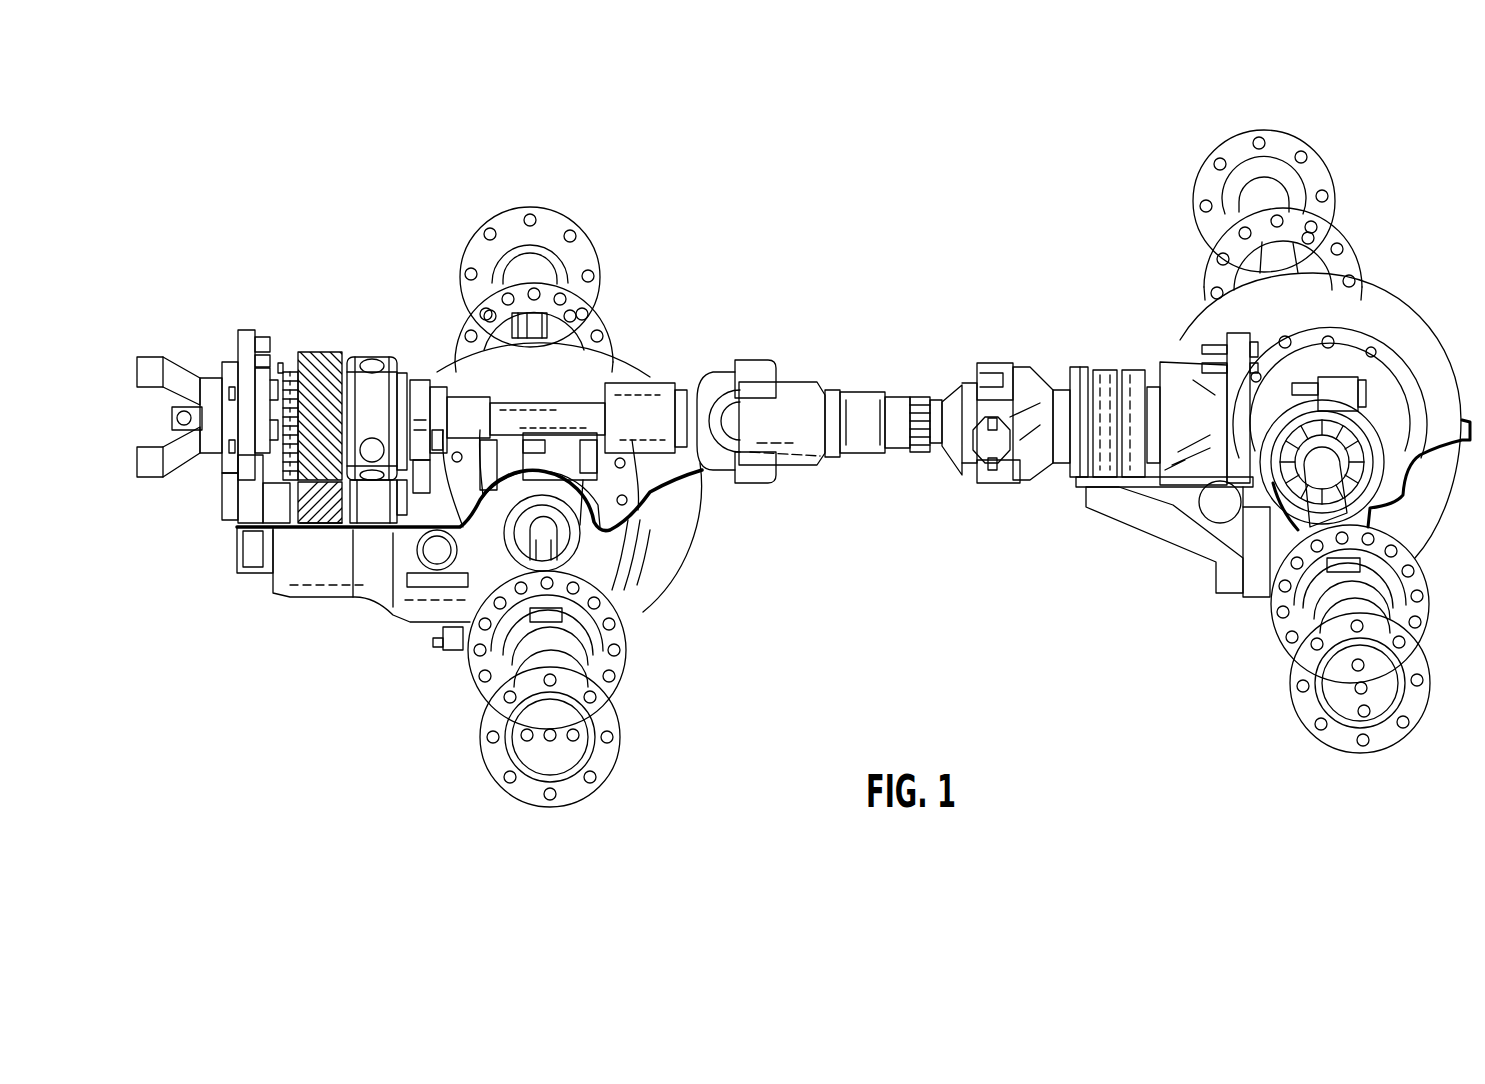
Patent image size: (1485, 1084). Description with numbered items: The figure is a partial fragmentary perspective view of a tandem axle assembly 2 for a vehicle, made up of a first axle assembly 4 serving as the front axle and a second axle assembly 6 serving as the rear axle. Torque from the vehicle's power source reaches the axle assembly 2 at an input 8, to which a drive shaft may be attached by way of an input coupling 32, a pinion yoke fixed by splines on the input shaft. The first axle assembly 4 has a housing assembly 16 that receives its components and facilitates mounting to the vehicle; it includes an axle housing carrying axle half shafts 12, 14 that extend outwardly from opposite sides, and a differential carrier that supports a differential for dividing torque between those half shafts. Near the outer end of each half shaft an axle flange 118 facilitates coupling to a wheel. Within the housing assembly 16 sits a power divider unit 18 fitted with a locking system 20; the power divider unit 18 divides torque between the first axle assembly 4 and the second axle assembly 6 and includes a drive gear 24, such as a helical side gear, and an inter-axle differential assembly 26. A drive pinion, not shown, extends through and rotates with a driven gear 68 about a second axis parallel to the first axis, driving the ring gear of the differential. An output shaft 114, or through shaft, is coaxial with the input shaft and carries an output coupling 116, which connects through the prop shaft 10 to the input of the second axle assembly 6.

The axle assembly 2 is at (338, 158).
The first axle assembly 4 is at (482, 205).
The second axle assembly 6 is at (1254, 118).
The input 8 is at (145, 328).
The prop shaft 10 is at (862, 362).
The axle half shaft 12 is at (547, 545).
The axle half shaft 14 is at (530, 327).
The housing assembly 16 is at (683, 520).
The power divider unit 18 is at (366, 338).
The locking system 20 is at (288, 340).
The drive gear 24 is at (316, 338).
The inter-axle differential assembly 26 is at (385, 340).
The input coupling 32 is at (175, 358).
The driven gear 68 is at (320, 513).
The output shaft 114 is at (563, 430).
The output coupling 116 is at (750, 370).
The axle flange 118 is at (548, 228).